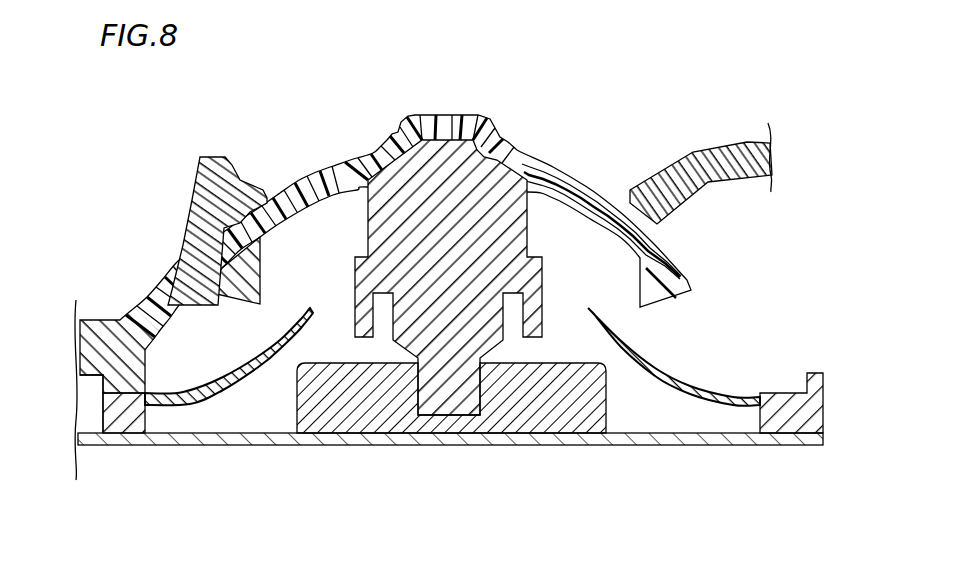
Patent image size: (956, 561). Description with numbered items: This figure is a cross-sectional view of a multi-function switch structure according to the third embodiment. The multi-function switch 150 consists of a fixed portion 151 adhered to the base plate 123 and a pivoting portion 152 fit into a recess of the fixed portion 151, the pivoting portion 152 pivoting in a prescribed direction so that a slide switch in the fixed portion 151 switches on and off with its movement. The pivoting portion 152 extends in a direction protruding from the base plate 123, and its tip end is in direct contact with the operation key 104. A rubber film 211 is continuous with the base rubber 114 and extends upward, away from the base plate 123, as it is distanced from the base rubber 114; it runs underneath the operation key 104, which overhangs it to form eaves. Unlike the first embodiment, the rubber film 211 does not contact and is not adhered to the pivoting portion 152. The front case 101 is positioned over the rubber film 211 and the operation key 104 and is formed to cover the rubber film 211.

The front case 101 is at (211, 157).
The operation key 104 is at (447, 115).
The base rubber 114 is at (100, 402).
The base plate 123 is at (724, 438).
The multi-function switch 150 is at (465, 492).
The fixed portion 151 is at (548, 398).
The pivoting portion 152 is at (461, 398).
The rubber film 211 is at (222, 400).